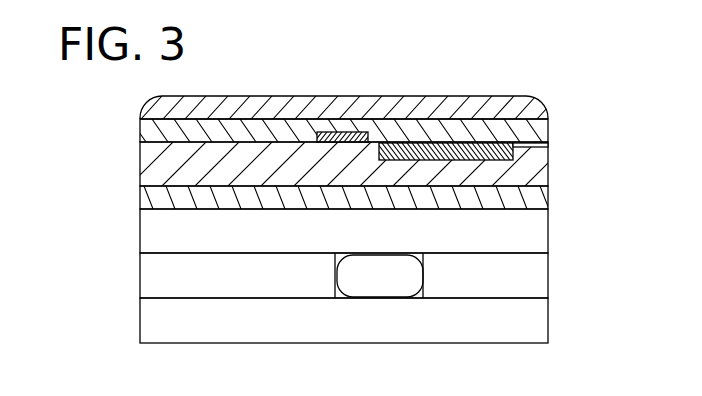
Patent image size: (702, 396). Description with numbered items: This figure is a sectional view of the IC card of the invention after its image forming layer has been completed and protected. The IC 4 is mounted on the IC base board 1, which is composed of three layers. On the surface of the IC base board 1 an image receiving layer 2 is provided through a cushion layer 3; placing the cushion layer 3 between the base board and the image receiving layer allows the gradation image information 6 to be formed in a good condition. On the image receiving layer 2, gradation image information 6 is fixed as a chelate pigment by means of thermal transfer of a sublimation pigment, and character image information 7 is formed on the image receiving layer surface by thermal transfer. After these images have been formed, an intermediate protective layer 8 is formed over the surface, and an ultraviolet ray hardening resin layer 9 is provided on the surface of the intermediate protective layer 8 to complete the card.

The IC base board 1 is at (537, 235).
The image receiving layer 2 is at (538, 174).
The cushion layer 3 is at (538, 200).
The IC 4 is at (414, 280).
The gradation image information 6 is at (514, 147).
The character image information 7 is at (349, 131).
The intermediate protective layer 8 is at (152, 132).
The ultraviolet ray hardening resin layer 9 is at (528, 101).